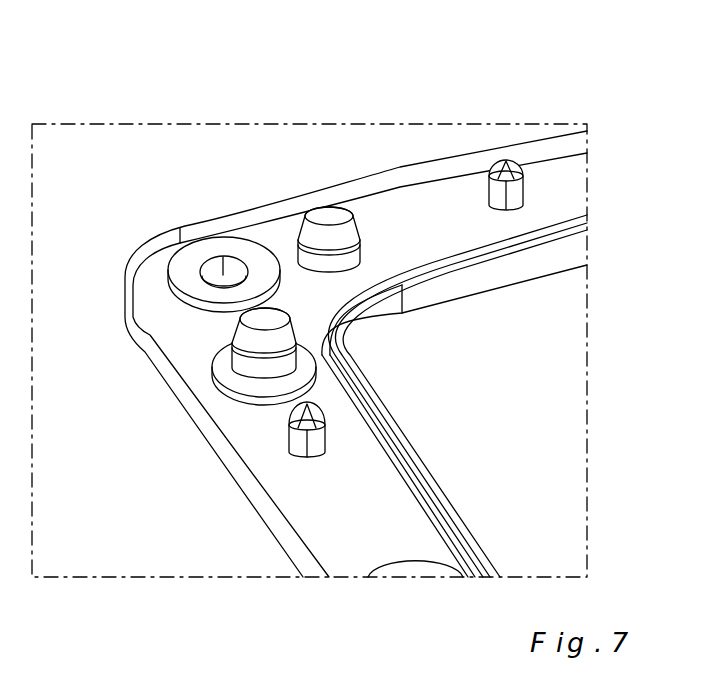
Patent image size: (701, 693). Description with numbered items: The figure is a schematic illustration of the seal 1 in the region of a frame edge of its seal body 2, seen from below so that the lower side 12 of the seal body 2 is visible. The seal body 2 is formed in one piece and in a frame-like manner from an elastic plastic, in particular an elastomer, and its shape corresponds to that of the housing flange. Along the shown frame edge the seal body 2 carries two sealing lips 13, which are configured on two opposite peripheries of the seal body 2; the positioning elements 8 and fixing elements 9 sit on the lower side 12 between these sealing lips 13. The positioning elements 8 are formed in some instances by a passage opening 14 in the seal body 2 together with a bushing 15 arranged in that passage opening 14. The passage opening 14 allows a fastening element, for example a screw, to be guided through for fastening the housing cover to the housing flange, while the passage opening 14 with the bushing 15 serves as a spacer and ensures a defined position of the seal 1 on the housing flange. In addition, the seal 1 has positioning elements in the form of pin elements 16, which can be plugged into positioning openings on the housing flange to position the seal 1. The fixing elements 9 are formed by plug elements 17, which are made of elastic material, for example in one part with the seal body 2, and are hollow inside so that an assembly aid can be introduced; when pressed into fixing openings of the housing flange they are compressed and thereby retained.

The seal 1 is at (470, 131).
The seal body 2 is at (573, 252).
The positioning element 8 is at (222, 226).
The fixing element 9 is at (196, 392).
The lower side 12 is at (398, 212).
The sealing lip 13 is at (450, 160).
The passage opening 14 is at (227, 277).
The bushing 15 is at (200, 257).
The pin element 16 is at (305, 437).
The plug element 17 is at (330, 214).